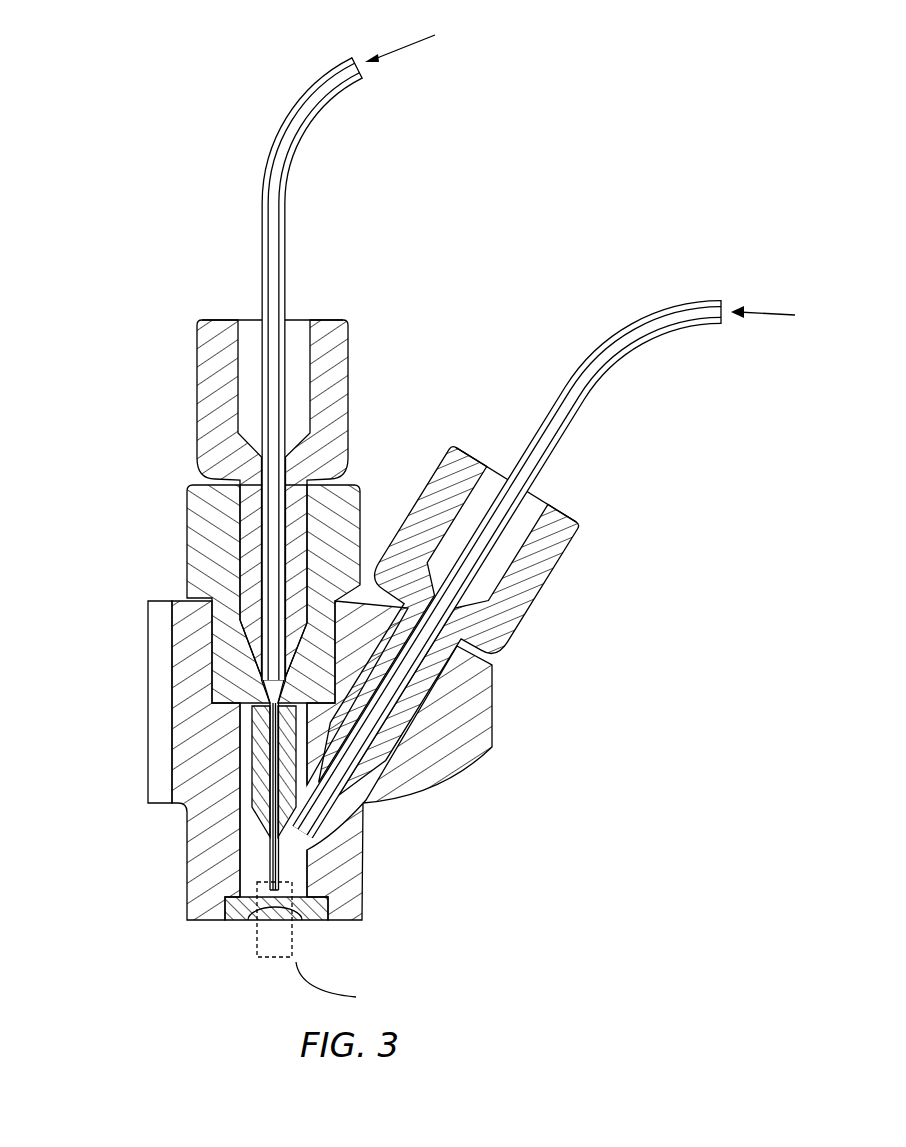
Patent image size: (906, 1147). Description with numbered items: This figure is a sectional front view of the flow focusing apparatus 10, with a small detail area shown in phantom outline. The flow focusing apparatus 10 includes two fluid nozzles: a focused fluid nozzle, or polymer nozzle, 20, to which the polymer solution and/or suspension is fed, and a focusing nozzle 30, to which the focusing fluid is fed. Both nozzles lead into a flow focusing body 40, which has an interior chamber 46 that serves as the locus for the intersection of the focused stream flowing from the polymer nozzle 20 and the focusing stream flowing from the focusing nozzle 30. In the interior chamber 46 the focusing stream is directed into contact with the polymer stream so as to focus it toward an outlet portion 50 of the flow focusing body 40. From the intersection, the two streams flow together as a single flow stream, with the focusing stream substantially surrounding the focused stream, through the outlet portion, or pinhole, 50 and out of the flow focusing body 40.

The flow focusing apparatus 10 is at (92, 192).
The focused fluid nozzle 20 is at (330, 357).
The focusing nozzle 30 is at (555, 572).
The flow focusing body 40 is at (203, 738).
The interior chamber 46 is at (258, 847).
The outlet portion 50 is at (296, 937).